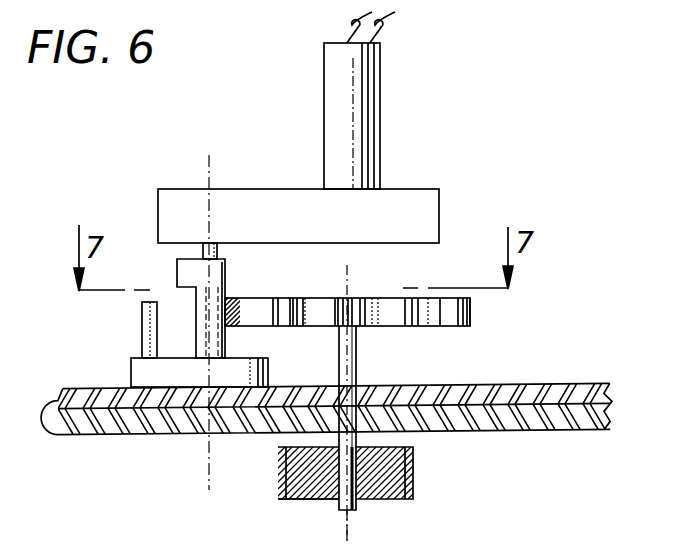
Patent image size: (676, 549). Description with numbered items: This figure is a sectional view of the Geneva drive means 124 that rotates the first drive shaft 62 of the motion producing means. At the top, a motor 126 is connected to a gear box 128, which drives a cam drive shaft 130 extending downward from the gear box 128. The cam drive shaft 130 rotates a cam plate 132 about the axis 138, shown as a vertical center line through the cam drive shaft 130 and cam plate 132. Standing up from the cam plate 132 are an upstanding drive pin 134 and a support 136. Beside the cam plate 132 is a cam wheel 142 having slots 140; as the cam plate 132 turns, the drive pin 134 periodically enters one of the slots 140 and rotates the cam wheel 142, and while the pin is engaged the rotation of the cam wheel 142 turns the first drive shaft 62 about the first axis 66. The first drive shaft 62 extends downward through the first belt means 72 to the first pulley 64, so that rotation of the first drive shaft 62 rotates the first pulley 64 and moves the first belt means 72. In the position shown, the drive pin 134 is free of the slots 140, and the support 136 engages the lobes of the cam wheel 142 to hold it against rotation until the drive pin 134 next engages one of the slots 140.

The Geneva drive means 124 is at (296, 131).
The motor 126 is at (382, 110).
The gear box 128 is at (412, 188).
The cam drive shaft 130 is at (203, 251).
The cam plate 132 is at (131, 372).
The drive pin 134 is at (142, 318).
The support 136 is at (228, 280).
The axis 138 is at (208, 446).
The slots 140 is at (277, 300).
The cam wheel 142 is at (440, 327).
The first belt means 72 is at (413, 469).
The first drive shaft 62 is at (358, 505).
The first pulley 64 is at (312, 495).
The first axis 66 is at (356, 518).